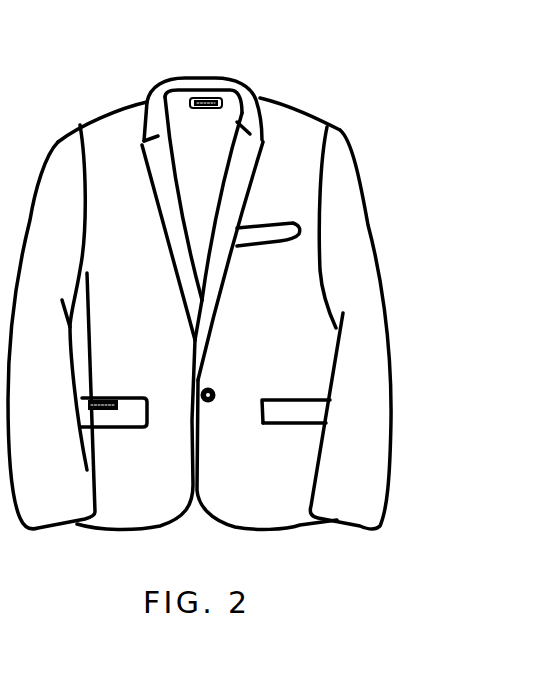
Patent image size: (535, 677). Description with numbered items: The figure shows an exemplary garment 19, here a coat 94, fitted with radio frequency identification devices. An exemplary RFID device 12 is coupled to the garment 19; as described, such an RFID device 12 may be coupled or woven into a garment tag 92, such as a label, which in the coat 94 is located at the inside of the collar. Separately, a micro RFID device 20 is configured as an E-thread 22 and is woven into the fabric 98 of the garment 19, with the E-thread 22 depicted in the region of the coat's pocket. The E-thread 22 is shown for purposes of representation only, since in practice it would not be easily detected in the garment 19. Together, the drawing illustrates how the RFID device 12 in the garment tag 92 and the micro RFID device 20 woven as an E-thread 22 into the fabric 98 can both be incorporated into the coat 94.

The RFID device 12 is at (217, 97).
The garment 19 is at (287, 127).
The micro RFID device 20 is at (107, 397).
The E-thread 22 is at (93, 398).
The garment tag 92 is at (199, 100).
The coat 94 is at (333, 193).
The fabric 98 is at (357, 280).